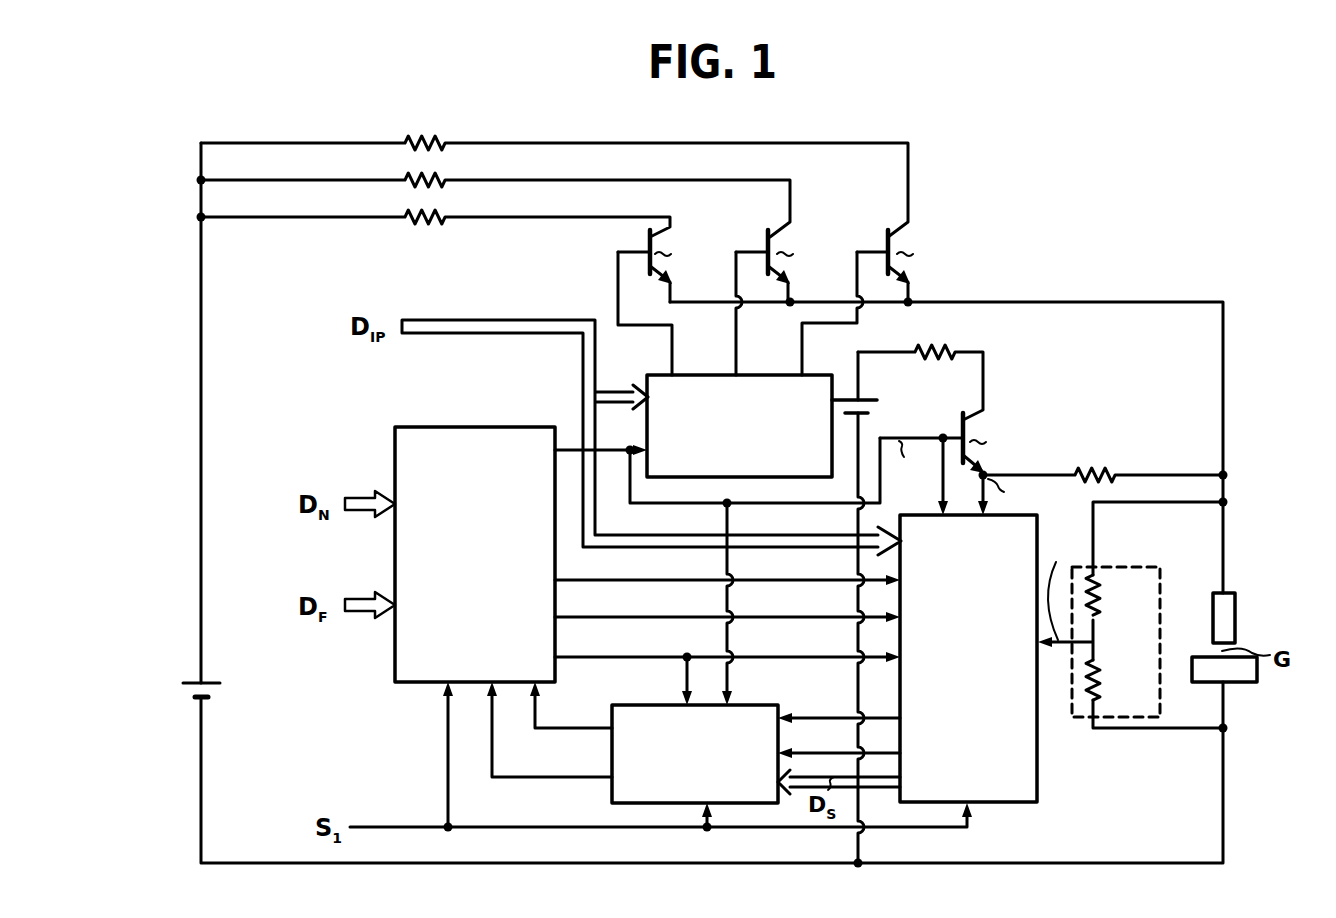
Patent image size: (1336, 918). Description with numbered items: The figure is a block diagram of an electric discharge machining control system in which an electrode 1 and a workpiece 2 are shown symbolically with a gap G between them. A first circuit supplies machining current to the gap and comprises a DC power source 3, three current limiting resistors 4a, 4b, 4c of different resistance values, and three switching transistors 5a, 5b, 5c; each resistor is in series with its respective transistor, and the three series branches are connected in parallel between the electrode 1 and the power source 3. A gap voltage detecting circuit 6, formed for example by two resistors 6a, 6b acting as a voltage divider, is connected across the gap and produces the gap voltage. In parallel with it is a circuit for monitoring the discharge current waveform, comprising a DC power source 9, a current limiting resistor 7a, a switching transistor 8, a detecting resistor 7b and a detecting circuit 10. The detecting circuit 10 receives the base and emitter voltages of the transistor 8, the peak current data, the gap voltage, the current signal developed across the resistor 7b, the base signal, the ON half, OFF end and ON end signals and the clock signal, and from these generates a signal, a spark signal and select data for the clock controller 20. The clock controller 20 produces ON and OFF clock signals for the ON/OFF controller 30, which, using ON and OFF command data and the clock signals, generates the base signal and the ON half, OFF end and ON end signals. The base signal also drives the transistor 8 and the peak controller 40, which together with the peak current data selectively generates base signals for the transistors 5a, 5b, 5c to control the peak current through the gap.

The electrode 1 is at (1237, 620).
The workpiece 2 is at (1243, 684).
The DC power source 3 is at (175, 688).
The current limiting resistor 4a is at (443, 208).
The current limiting resistor 4b is at (443, 170).
The current limiting resistor 4c is at (443, 133).
The switching transistor 5a is at (640, 247).
The switching transistor 5b is at (763, 237).
The switching transistor 5c is at (886, 237).
The gap voltage detecting circuit 6 is at (1085, 718).
The resistor 6a is at (1100, 600).
The resistor 6b is at (1100, 690).
The current limiting resistor 7a is at (948, 347).
The detecting resistor 7b is at (1096, 468).
The switching transistor 8 is at (959, 420).
The DC power source 9 is at (872, 411).
The detecting circuit 10 is at (1018, 803).
The clock controller 20 is at (611, 801).
The ON/OFF controller 30 is at (457, 427).
The peak controller 40 is at (646, 375).